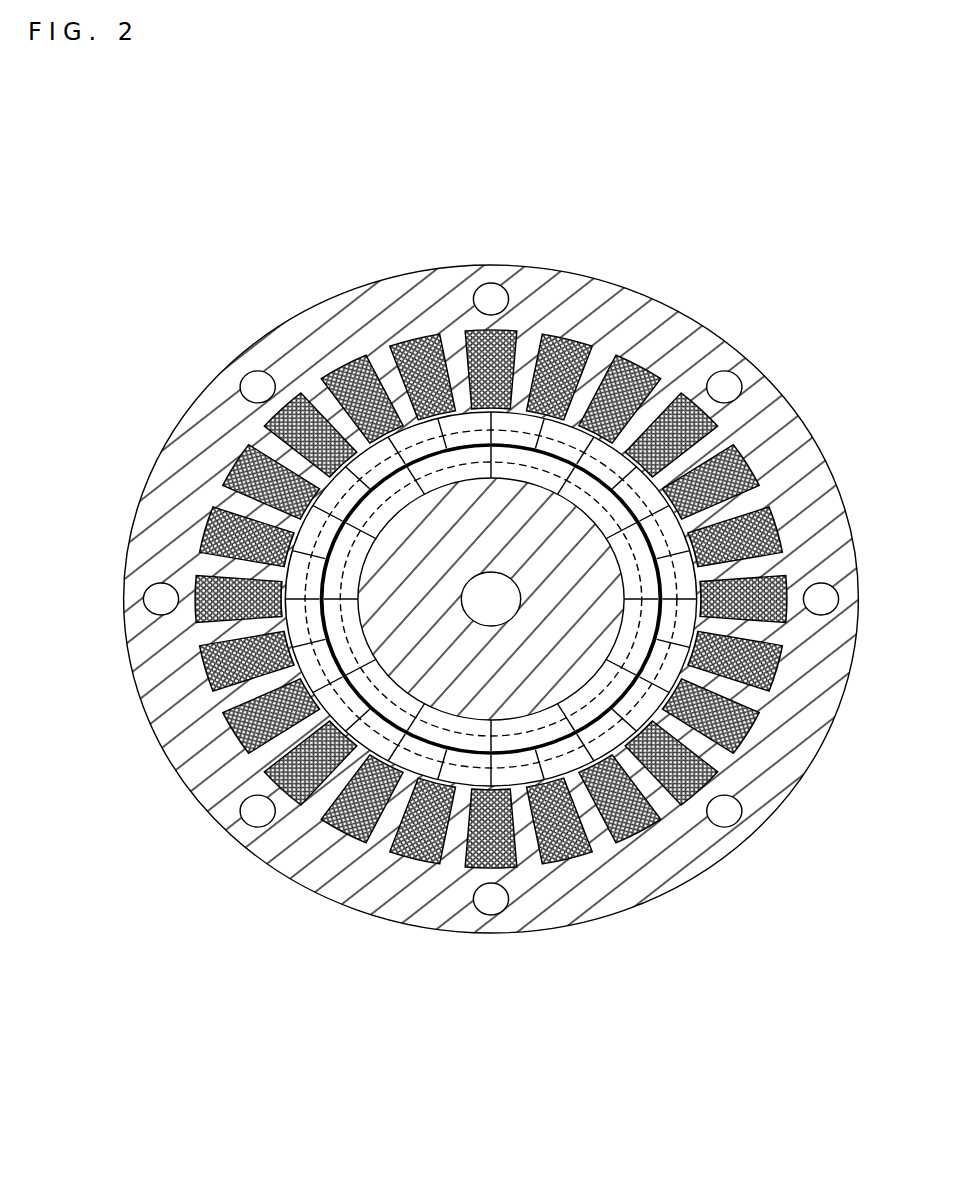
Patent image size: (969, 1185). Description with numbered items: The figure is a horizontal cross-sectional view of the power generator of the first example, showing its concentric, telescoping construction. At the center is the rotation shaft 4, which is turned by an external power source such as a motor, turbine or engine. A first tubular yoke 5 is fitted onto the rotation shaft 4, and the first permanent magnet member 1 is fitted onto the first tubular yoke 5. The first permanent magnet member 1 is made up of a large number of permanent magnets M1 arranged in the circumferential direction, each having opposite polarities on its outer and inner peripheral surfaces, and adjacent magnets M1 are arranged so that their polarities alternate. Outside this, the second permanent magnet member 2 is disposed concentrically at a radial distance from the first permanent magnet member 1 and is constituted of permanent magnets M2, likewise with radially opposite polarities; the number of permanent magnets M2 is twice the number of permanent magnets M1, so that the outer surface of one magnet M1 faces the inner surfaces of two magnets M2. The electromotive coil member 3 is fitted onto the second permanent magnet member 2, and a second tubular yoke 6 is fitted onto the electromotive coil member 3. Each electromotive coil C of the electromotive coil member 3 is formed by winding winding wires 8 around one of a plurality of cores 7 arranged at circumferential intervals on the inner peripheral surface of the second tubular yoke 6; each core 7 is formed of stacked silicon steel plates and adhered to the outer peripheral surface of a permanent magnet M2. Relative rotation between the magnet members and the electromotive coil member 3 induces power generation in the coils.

The first permanent magnet member 1 is at (394, 668).
The second permanent magnet member 2 is at (571, 415).
The electromotive coil member 3 is at (467, 332).
The rotation shaft 4 is at (498, 612).
The first tubular yoke 5 is at (570, 576).
The second tubular yoke 6 is at (680, 872).
The core 7 is at (300, 548).
The winding wire 8 is at (210, 518).
The electromotive coil C is at (386, 368).
The permanent magnet M1 is at (408, 500).
The permanent magnet M2 is at (640, 472).